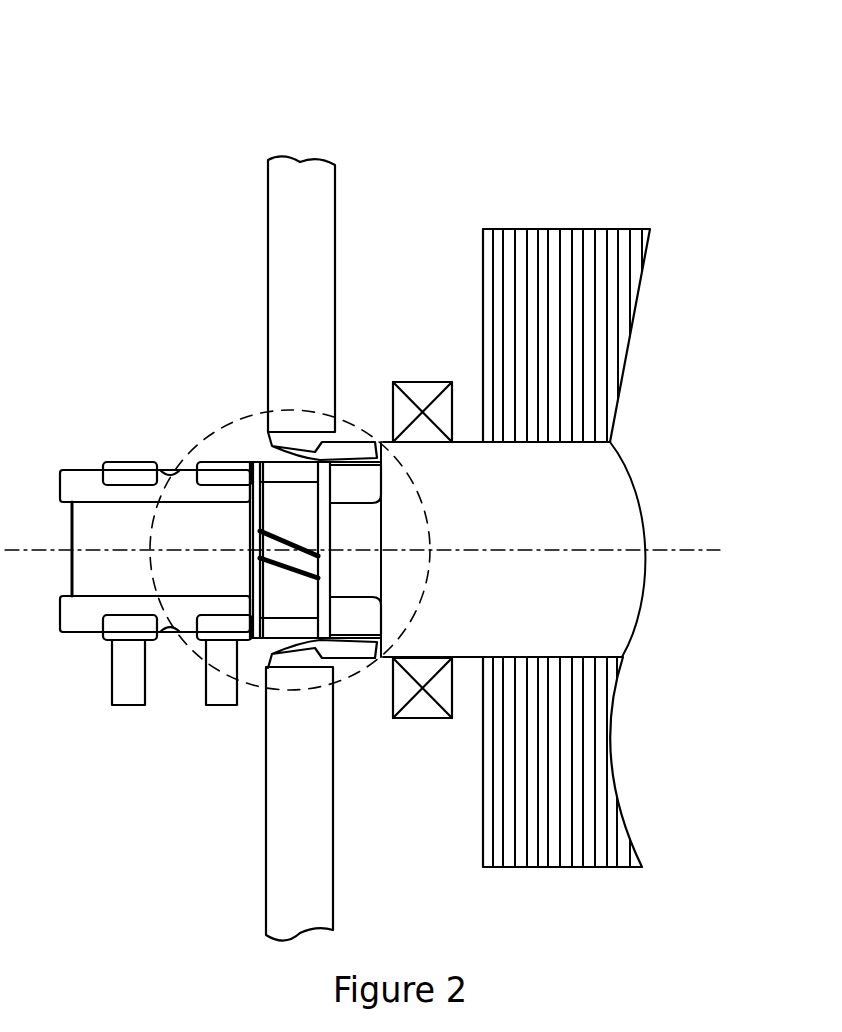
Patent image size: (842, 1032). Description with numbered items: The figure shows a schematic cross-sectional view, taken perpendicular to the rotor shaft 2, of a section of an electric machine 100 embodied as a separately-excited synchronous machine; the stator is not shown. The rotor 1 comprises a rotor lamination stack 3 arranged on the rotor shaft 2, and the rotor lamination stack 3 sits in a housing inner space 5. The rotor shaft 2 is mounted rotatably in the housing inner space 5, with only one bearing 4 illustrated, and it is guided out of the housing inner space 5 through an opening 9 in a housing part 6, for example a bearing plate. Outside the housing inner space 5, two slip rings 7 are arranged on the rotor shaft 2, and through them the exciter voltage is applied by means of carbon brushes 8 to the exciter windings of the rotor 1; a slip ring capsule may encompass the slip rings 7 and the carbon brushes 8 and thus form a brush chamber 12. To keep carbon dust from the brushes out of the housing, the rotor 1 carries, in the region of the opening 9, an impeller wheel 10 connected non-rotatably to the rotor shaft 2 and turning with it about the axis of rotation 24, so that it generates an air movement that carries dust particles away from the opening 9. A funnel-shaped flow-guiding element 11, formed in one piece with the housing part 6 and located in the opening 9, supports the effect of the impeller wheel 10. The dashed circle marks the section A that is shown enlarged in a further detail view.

The electric machine 100 is at (753, 58).
The rotor 1 is at (559, 160).
The rotor shaft 2 is at (90, 522).
The rotor lamination stack 3 is at (608, 810).
The bearing 4 is at (418, 718).
The housing inner space 5 is at (430, 233).
The housing part 6 is at (322, 830).
The slip rings 7 is at (132, 457).
The carbon brushes 8 is at (128, 705).
The opening 9 is at (254, 690).
The impeller wheel 10 is at (277, 510).
The flow-guiding element 11 is at (295, 342).
The brush chamber 12 is at (138, 263).
The axis of rotation 24 is at (556, 553).
The section A is at (423, 502).